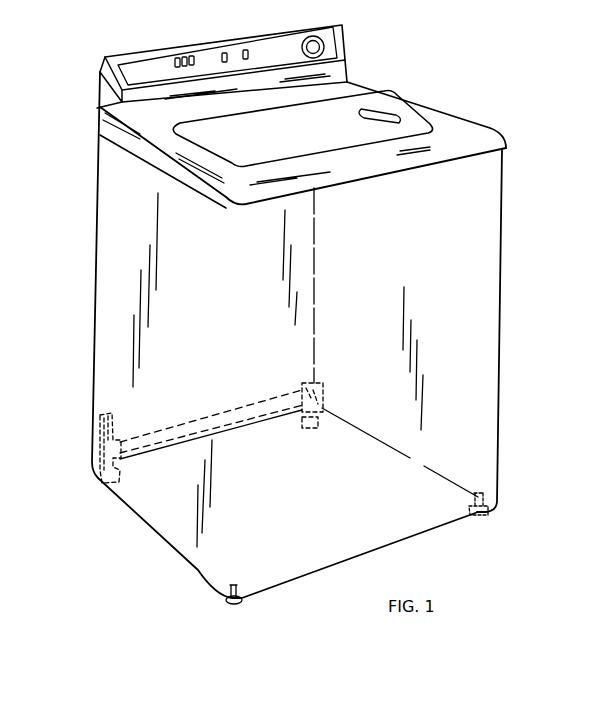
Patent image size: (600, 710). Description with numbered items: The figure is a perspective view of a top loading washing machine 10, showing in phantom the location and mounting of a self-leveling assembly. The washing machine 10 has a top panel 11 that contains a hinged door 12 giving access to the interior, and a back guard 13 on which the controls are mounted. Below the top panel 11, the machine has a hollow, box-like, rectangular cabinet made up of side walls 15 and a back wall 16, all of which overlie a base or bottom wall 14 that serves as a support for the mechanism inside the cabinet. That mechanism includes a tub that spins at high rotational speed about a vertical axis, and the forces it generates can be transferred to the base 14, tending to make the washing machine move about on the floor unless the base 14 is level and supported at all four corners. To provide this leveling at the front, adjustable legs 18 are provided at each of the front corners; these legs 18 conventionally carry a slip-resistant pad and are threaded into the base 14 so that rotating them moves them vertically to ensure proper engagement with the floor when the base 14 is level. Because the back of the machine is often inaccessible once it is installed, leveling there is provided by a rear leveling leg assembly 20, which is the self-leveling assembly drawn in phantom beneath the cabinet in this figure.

The washing machine 10 is at (500, 308).
The top panel 11 is at (457, 130).
The hinged door 12 is at (363, 127).
The back guard 13 is at (330, 45).
The base or bottom wall 14 is at (187, 520).
The side walls 15 is at (455, 380).
The back wall 16 is at (107, 285).
The adjustable legs 18 is at (242, 603).
The rear leveling leg assembly 20 is at (160, 438).